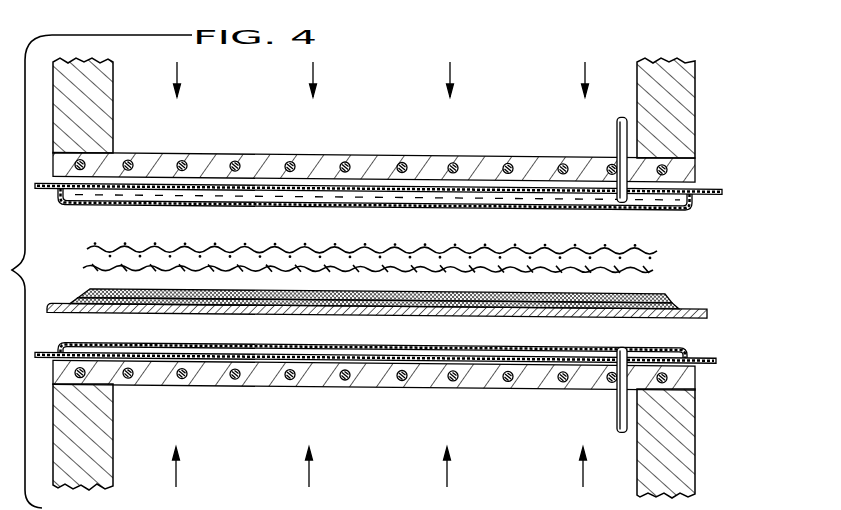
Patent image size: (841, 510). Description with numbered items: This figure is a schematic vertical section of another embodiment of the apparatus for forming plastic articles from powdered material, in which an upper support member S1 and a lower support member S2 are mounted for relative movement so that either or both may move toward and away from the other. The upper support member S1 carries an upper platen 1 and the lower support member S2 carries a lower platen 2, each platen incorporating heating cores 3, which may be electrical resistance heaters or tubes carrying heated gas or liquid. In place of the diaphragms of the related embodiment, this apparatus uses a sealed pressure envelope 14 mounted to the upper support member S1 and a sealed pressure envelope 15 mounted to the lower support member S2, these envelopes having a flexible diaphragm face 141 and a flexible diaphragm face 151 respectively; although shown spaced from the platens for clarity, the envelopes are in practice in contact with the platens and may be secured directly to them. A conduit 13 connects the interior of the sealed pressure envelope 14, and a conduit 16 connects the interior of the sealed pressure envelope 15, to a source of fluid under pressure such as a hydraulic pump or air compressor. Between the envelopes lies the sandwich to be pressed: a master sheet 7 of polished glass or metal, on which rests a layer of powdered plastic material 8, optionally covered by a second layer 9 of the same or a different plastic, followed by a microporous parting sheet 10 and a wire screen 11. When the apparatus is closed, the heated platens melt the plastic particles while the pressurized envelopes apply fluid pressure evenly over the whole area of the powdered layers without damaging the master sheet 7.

The upper platen 1 is at (323, 163).
The lower platen 2 is at (377, 383).
The heating cores 3 is at (235, 157).
The master sheet 7 is at (424, 315).
The layer of powdered plastic material 8 is at (680, 304).
The second layer 9 is at (663, 296).
The microporous parting sheet 10 is at (665, 270).
The wire screen 11 is at (540, 250).
The conduit 13 is at (617, 138).
The sealed pressure envelope 14 is at (233, 197).
The flexible diaphragm face 141 is at (326, 204).
The sealed pressure envelope 15 is at (204, 342).
The flexible diaphragm face 151 is at (277, 344).
The conduit 16 is at (615, 420).
The upper support member S1 is at (90, 117).
The lower support member S2 is at (97, 431).